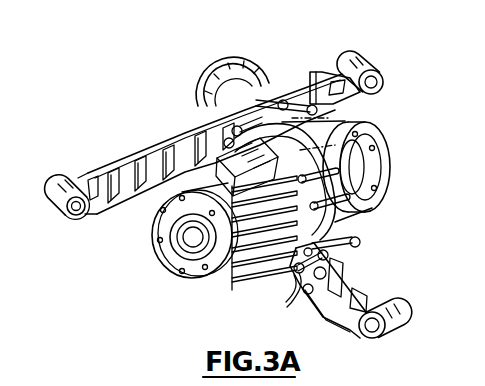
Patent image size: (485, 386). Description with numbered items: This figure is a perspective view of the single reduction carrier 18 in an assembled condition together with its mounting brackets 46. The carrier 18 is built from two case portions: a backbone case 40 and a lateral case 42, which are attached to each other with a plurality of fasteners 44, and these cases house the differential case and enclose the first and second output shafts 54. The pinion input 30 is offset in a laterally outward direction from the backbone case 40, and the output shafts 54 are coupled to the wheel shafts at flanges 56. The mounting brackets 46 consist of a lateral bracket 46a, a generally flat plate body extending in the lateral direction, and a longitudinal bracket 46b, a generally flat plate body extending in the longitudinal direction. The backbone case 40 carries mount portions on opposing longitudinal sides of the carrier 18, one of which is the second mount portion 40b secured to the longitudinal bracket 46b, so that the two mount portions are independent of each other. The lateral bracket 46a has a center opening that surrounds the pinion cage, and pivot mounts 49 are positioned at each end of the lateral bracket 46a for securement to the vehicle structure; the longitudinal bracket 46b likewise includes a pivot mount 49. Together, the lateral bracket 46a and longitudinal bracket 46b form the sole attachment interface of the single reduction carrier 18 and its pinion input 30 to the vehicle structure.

The single reduction carrier 18 is at (399, 125).
The pinion input 30 is at (268, 84).
The backbone case 40 is at (357, 220).
The second mount portion 40b is at (316, 100).
The lateral case 42 is at (260, 250).
The fasteners 44 is at (299, 304).
The mounting brackets 46 is at (248, 177).
The lateral bracket 46a is at (187, 142).
The longitudinal bracket 46b is at (348, 312).
The pivot mounts 49 is at (356, 58).
The output shafts 54 is at (166, 258).
The flanges 56 is at (388, 158).